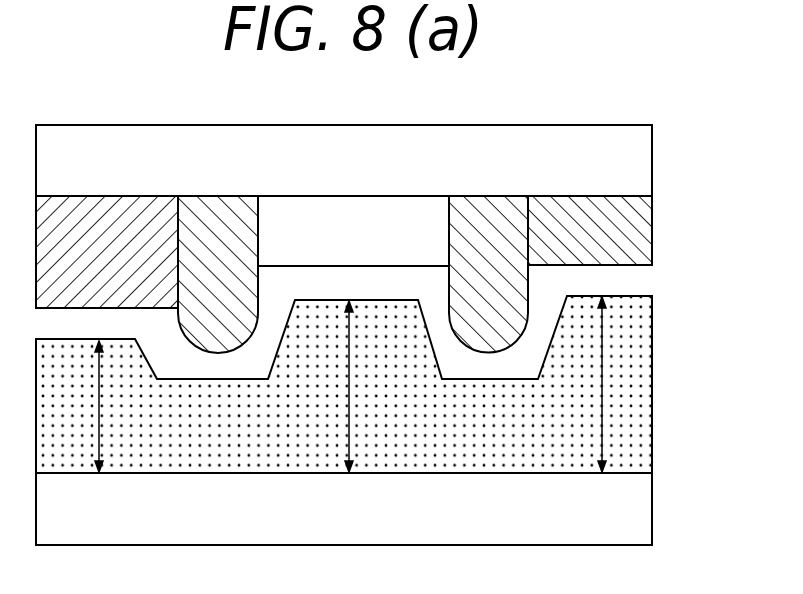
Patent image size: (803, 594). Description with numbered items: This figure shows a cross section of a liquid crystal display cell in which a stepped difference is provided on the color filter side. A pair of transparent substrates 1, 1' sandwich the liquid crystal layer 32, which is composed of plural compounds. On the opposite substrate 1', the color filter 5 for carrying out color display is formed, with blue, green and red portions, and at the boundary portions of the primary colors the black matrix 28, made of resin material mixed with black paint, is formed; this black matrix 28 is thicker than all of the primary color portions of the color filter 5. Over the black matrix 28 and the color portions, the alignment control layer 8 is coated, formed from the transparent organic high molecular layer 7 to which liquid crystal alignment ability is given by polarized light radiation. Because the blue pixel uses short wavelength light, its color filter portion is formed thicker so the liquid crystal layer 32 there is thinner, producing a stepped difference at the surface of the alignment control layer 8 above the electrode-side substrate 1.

The transparent substrate 1' is at (378, 158).
The color filter 5 is at (652, 236).
The light-shielding plug / black matrix portion 28 is at (492, 215).
The transparent organic high molecular layer 7 is at (652, 291).
The alignment control layer 8 is at (344, 286).
The liquid crystal layer 32 is at (642, 379).
The transparent substrate 1 is at (377, 509).